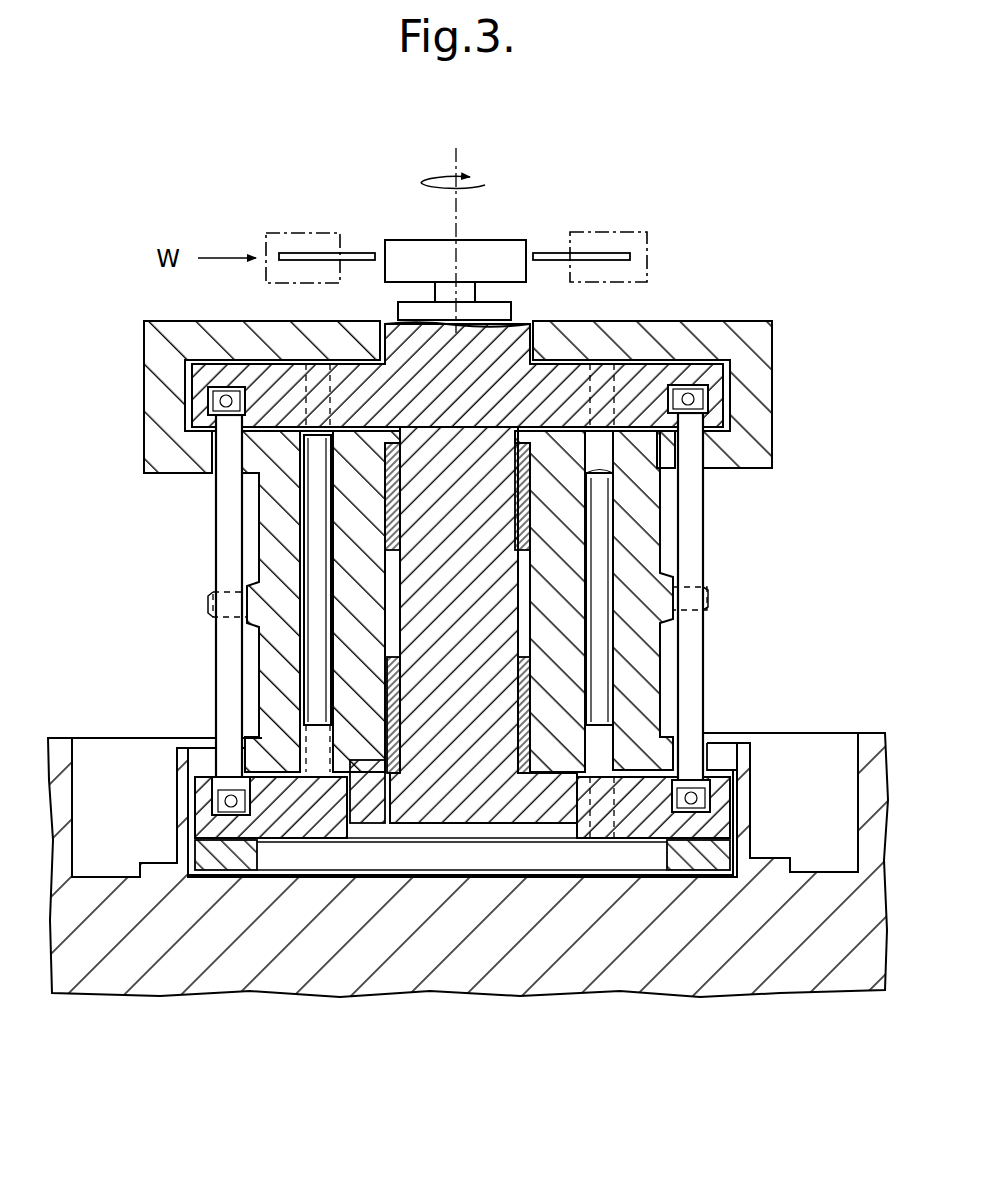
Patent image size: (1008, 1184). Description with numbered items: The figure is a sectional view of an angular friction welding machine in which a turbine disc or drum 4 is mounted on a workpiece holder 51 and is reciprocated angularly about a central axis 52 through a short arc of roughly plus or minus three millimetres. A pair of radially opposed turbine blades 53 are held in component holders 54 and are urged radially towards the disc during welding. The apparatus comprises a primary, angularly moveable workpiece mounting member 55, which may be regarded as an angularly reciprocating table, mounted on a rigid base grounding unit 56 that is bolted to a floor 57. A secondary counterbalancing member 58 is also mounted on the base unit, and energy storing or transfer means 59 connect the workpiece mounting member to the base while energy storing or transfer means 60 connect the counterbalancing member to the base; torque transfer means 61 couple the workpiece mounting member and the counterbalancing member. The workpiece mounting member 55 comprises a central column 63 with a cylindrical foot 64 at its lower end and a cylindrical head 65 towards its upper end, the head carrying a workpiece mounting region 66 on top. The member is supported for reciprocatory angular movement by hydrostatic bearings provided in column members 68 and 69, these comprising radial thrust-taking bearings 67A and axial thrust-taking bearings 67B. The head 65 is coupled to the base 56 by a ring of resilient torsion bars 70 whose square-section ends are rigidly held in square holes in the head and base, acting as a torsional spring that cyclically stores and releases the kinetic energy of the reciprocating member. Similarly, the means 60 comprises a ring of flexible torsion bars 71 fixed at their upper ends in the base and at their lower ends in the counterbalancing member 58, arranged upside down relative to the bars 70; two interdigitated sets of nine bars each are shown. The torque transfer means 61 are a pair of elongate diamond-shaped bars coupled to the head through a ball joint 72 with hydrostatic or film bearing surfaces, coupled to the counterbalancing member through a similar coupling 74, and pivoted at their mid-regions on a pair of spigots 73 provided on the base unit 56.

The disc or drum 4 is at (505, 250).
The workpiece holder 51 is at (462, 287).
The central axis 52 is at (458, 157).
The turbine blades 53 is at (352, 253).
The component holders 54 is at (268, 232).
The workpiece mounting member 55 is at (496, 384).
The base grounding unit 56 is at (275, 540).
The floor 57 is at (455, 975).
The counterbalancing member 58 is at (290, 825).
The energy storing or transfer means 59 is at (313, 504).
The energy storing or transfer means 60 is at (600, 568).
The torque transfer means 61 is at (227, 565).
The central column 63 is at (475, 705).
The cylindrical foot 64 is at (542, 807).
The cylindrical head 65 is at (665, 360).
The workpiece mounting region 66 is at (420, 318).
The radial hydrostatic bearings 67A is at (510, 498).
The axial hydrostatic bearings 67B is at (535, 425).
The column member 68 is at (528, 515).
The column member 69 is at (517, 775).
The torsion bars 70 is at (317, 663).
The torsion bars 71 is at (605, 670).
The ball joint 72 is at (192, 398).
The spigots 73 is at (213, 608).
The coupling 74 is at (222, 795).